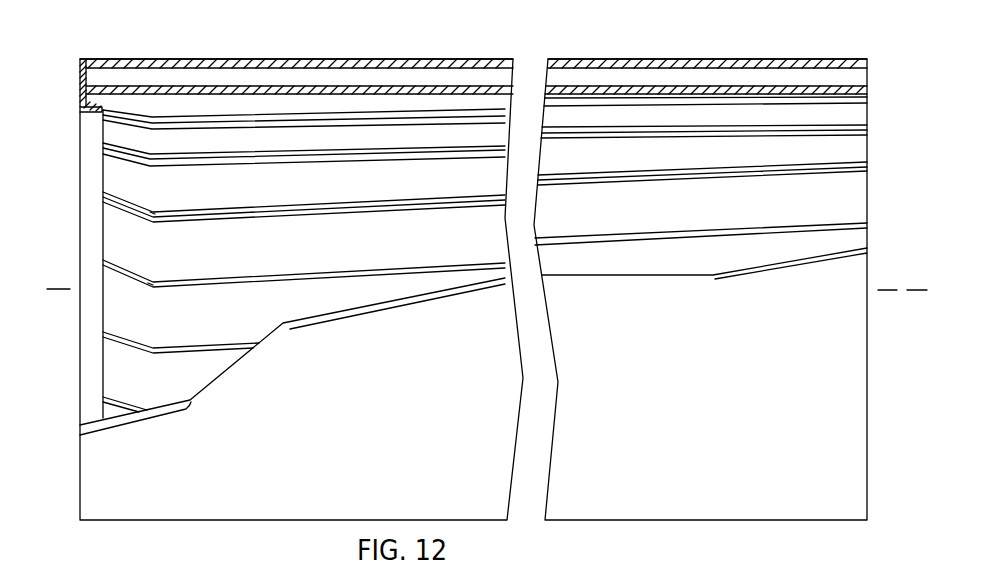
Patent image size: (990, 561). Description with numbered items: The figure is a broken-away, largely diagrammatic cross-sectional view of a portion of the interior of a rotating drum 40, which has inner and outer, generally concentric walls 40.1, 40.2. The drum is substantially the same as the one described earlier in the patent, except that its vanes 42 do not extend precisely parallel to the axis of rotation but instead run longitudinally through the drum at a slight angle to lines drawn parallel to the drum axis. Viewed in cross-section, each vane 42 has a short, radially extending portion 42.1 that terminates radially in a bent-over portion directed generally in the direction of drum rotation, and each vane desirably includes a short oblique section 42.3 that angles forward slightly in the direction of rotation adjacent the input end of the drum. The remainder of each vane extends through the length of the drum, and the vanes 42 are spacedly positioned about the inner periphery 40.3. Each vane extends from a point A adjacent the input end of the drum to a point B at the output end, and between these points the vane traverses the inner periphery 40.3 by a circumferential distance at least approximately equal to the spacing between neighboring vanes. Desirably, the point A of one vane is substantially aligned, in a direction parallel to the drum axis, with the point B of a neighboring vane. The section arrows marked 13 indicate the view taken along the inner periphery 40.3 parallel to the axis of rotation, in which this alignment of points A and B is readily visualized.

The rotating drum 40 is at (667, 521).
The inner wall 40.1 is at (367, 90).
The outer wall 40.2 is at (287, 65).
The inner periphery 40.3 is at (177, 93).
The vane 42 is at (252, 167).
The radially extending portion 42.1 is at (167, 153).
The oblique section 42.3 is at (126, 210).
The point A is at (153, 215).
The point B is at (860, 138).
The section line 13 is at (170, 463).